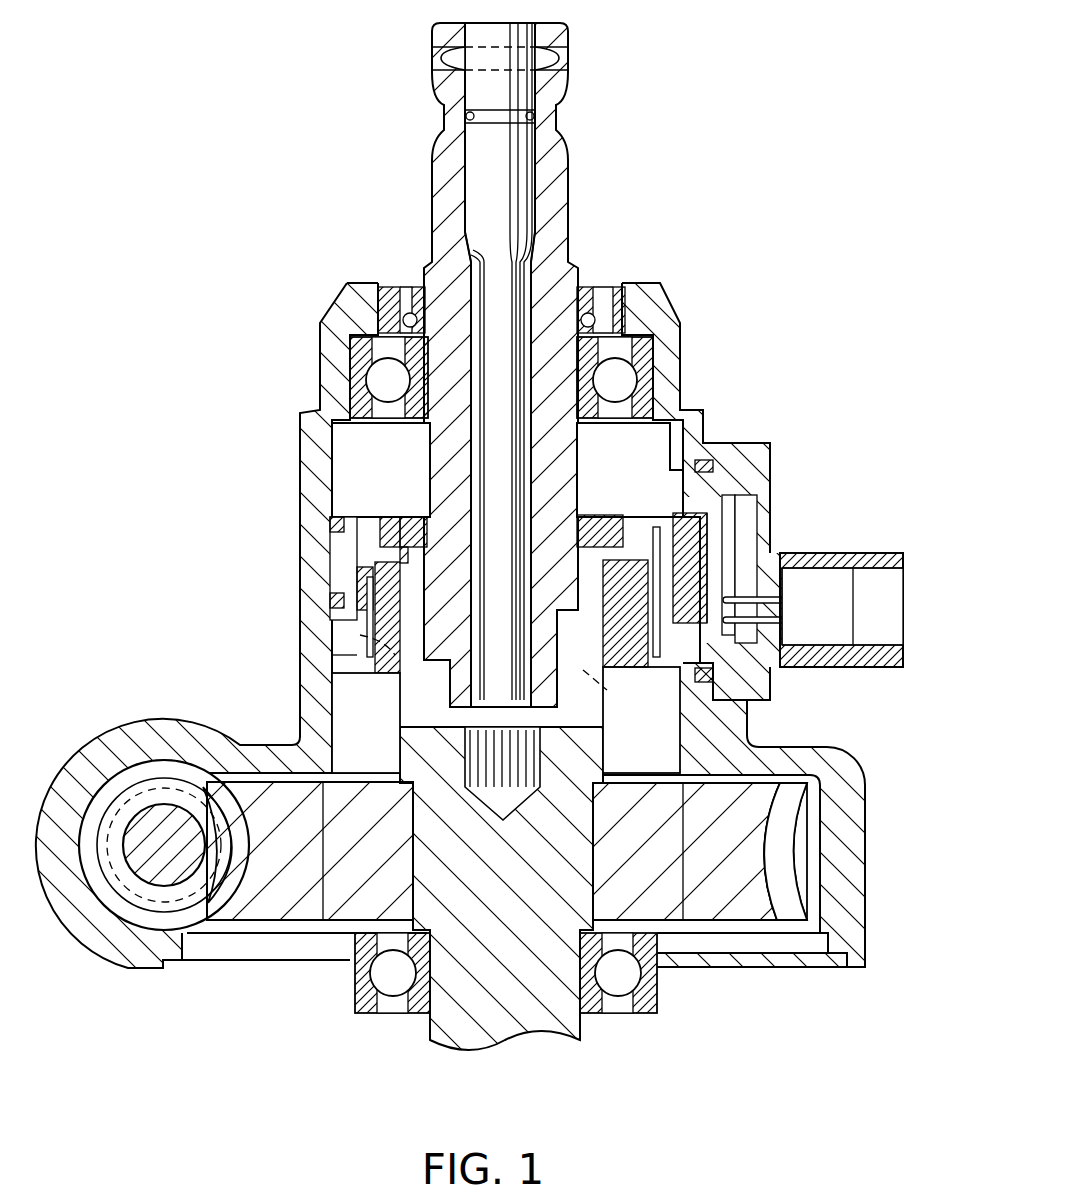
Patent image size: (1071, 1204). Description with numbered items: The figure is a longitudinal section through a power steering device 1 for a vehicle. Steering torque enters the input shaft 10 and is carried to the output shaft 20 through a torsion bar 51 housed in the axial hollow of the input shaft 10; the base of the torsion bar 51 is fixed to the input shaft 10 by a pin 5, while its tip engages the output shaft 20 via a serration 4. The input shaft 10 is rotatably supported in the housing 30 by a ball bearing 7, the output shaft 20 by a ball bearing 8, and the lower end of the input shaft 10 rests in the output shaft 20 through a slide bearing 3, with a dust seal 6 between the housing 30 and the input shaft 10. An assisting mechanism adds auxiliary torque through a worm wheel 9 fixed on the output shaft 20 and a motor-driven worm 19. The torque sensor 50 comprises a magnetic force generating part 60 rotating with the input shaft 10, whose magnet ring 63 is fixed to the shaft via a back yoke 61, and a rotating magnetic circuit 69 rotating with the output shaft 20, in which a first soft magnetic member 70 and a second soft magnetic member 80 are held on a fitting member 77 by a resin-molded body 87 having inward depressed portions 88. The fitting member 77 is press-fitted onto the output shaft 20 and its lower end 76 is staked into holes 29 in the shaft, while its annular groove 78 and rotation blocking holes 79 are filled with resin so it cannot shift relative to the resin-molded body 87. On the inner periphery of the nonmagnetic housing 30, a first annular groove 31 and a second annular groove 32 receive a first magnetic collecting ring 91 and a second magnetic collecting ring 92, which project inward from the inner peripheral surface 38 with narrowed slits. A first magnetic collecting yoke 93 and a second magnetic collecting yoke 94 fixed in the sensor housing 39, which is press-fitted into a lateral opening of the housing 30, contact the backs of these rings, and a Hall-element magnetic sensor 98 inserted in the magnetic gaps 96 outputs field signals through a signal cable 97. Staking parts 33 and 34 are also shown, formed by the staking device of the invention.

The power steering device 1 is at (620, 270).
The slide bearing 3 is at (425, 737).
The serration 4 is at (518, 765).
The pin 5 is at (548, 57).
The dust seal 6 is at (580, 285).
The ball bearing 7 is at (645, 362).
The ball bearing 8 is at (650, 1000).
The worm wheel 9 is at (215, 905).
The input shaft 10 is at (555, 170).
The worm 19 is at (158, 880).
The output shaft 20 is at (445, 1025).
The holes 29 is at (412, 700).
The housing 30 is at (347, 293).
The first annular groove 31 is at (332, 522).
The second annular groove 32 is at (368, 630).
The staking part 33 is at (340, 548).
The staking part 34 is at (360, 590).
The inner peripheral surface 38 is at (330, 432).
The sensor housing 39 is at (880, 667).
The torque sensor 50 is at (720, 513).
The torsion bar 51 is at (527, 250).
The magnetic force generating part 60 is at (358, 490).
The back yoke 61 is at (406, 545).
The magnet ring 63 is at (370, 545).
The rotating magnetic circuit 69 is at (633, 515).
The first soft magnetic member 70 is at (653, 545).
The lower end 76 is at (617, 703).
The fitting member 77 is at (603, 690).
The annular groove 78 is at (380, 660).
The rotation blocking holes 79 is at (375, 640).
The second soft magnetic member 80 is at (660, 640).
The resin-molded body 87 is at (345, 657).
The inward depressed portions 88 is at (640, 712).
The first magnetic collecting ring 91 is at (335, 528).
The second magnetic collecting ring 92 is at (333, 605).
The first magnetic collecting yoke 93 is at (700, 533).
The second magnetic collecting yoke 94 is at (773, 667).
The magnetic gaps 96 is at (745, 540).
The signal cable 97 is at (835, 665).
The magnetic sensor 98 is at (722, 578).